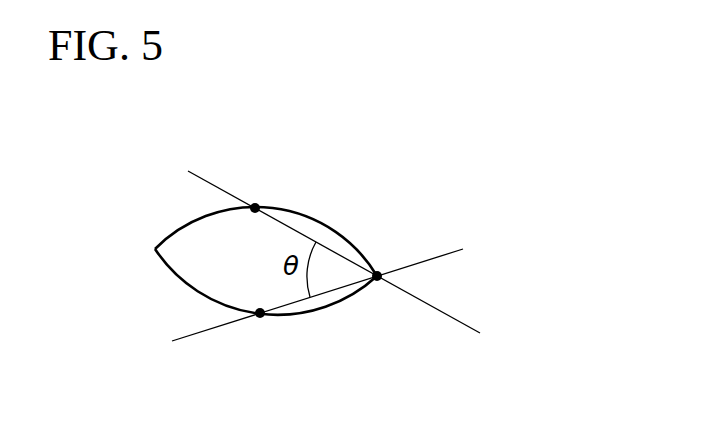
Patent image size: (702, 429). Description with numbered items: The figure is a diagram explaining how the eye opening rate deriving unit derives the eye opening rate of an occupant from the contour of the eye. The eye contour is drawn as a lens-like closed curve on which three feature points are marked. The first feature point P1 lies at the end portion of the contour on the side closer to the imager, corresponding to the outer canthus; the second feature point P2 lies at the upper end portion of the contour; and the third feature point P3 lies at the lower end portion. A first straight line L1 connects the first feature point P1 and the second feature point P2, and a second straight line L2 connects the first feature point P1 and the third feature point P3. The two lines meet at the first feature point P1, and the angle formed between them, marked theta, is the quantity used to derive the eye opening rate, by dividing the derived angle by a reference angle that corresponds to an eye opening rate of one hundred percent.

The first straight line L1 is at (440, 315).
The second straight line L2 is at (432, 258).
The first feature point P1 is at (377, 276).
The second feature point P2 is at (255, 208).
The third feature point P3 is at (260, 313).